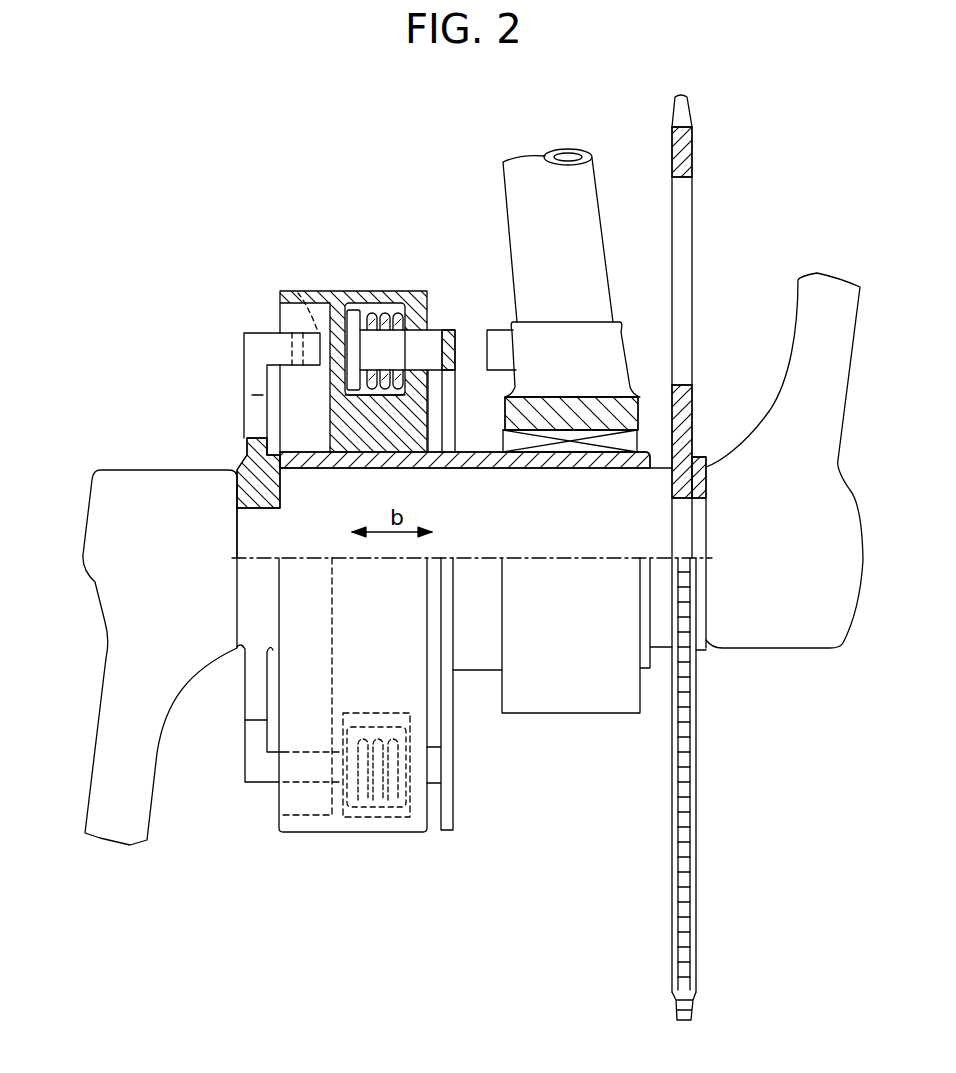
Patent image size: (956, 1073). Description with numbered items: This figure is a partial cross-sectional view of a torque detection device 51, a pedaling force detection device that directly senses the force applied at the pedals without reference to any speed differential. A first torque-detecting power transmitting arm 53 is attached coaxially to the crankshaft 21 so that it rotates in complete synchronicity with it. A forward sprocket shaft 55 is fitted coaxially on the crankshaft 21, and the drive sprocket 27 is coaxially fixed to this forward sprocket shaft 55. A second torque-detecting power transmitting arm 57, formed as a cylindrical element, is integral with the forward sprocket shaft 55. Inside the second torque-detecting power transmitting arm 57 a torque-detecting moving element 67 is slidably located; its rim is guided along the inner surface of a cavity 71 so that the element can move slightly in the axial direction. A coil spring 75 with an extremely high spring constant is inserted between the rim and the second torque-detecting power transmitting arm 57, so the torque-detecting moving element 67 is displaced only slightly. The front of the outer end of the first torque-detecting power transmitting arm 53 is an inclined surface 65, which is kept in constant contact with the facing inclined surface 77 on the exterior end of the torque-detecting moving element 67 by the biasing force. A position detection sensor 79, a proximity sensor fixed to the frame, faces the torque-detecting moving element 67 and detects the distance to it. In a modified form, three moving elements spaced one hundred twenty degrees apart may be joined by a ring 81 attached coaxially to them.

The crankshaft 21 is at (595, 528).
The drive sprocket 27 is at (683, 145).
The torque detection device 51 is at (252, 315).
The first torque-detecting power transmitting arm 53 is at (251, 421).
The forward sprocket shaft 55 is at (468, 655).
The second torque-detecting power transmitting arm 57 is at (385, 291).
The inclined surface 65 is at (296, 292).
The torque-detecting moving element 67 is at (428, 345).
The cavity 71 is at (365, 393).
The coil spring 75 is at (367, 820).
The facing inclined surface 77 is at (305, 329).
The position detection sensor 79 is at (503, 354).
The ring 81 is at (450, 803).